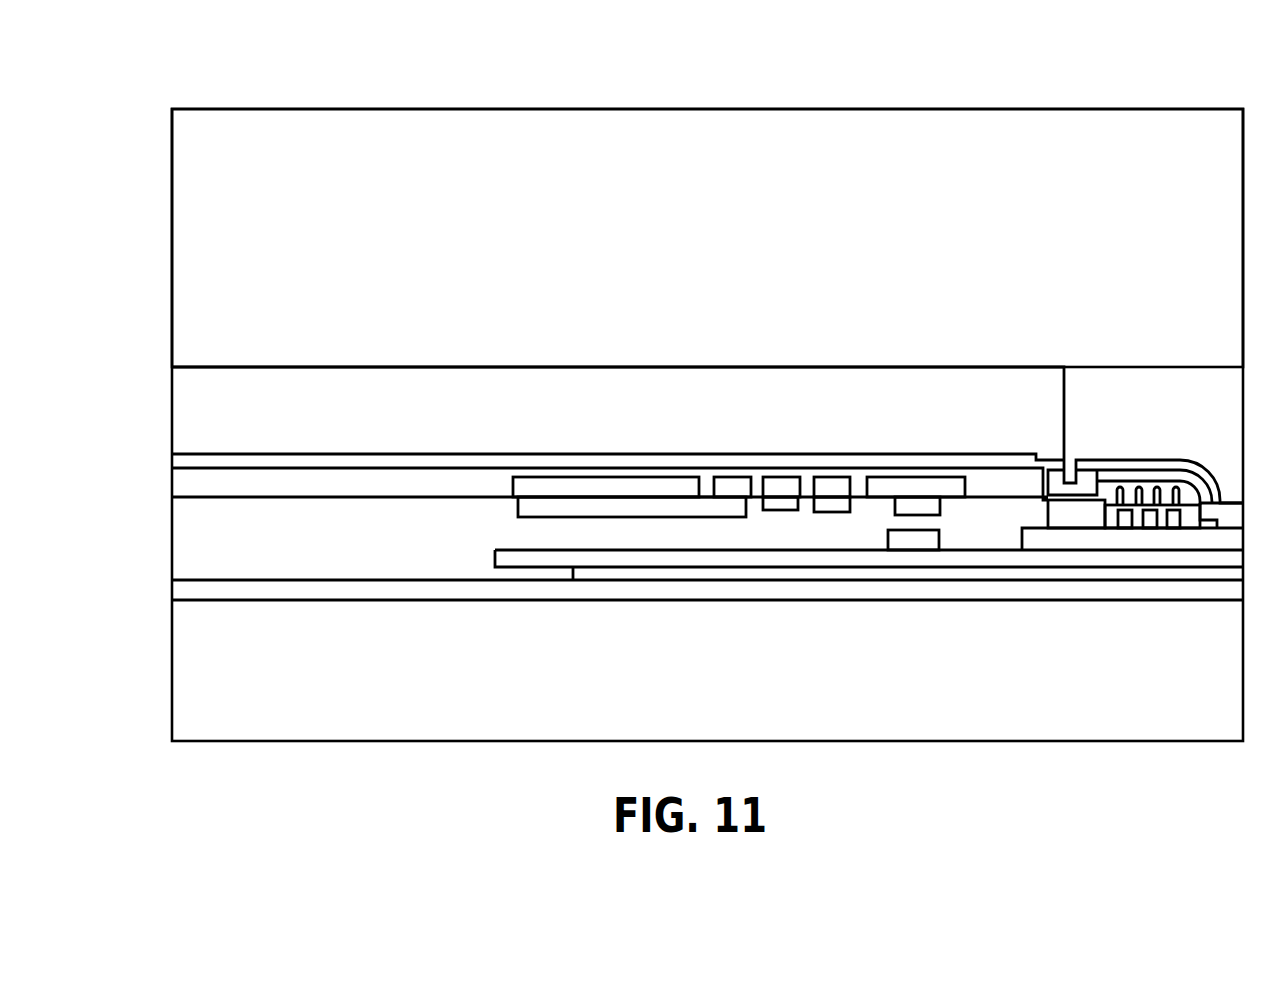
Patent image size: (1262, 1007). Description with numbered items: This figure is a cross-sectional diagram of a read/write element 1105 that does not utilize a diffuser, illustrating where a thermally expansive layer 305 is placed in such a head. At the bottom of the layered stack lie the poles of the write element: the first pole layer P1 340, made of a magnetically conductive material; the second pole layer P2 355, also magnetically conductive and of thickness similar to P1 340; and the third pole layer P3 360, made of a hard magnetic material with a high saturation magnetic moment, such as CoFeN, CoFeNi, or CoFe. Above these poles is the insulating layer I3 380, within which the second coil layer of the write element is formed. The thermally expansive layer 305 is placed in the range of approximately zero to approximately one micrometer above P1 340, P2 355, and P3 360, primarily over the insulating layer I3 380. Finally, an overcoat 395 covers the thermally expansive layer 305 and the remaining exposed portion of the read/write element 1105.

The read/write element 1105 is at (722, 65).
The overcoat 395 is at (788, 175).
The thermally expansive layer 305 is at (370, 455).
The insulating layer (I3) 380 is at (412, 490).
The first pole layer (P1) 340 is at (1037, 542).
The third pole layer (P3) 360 is at (1202, 513).
The second pole layer (P2) 355 is at (1230, 533).